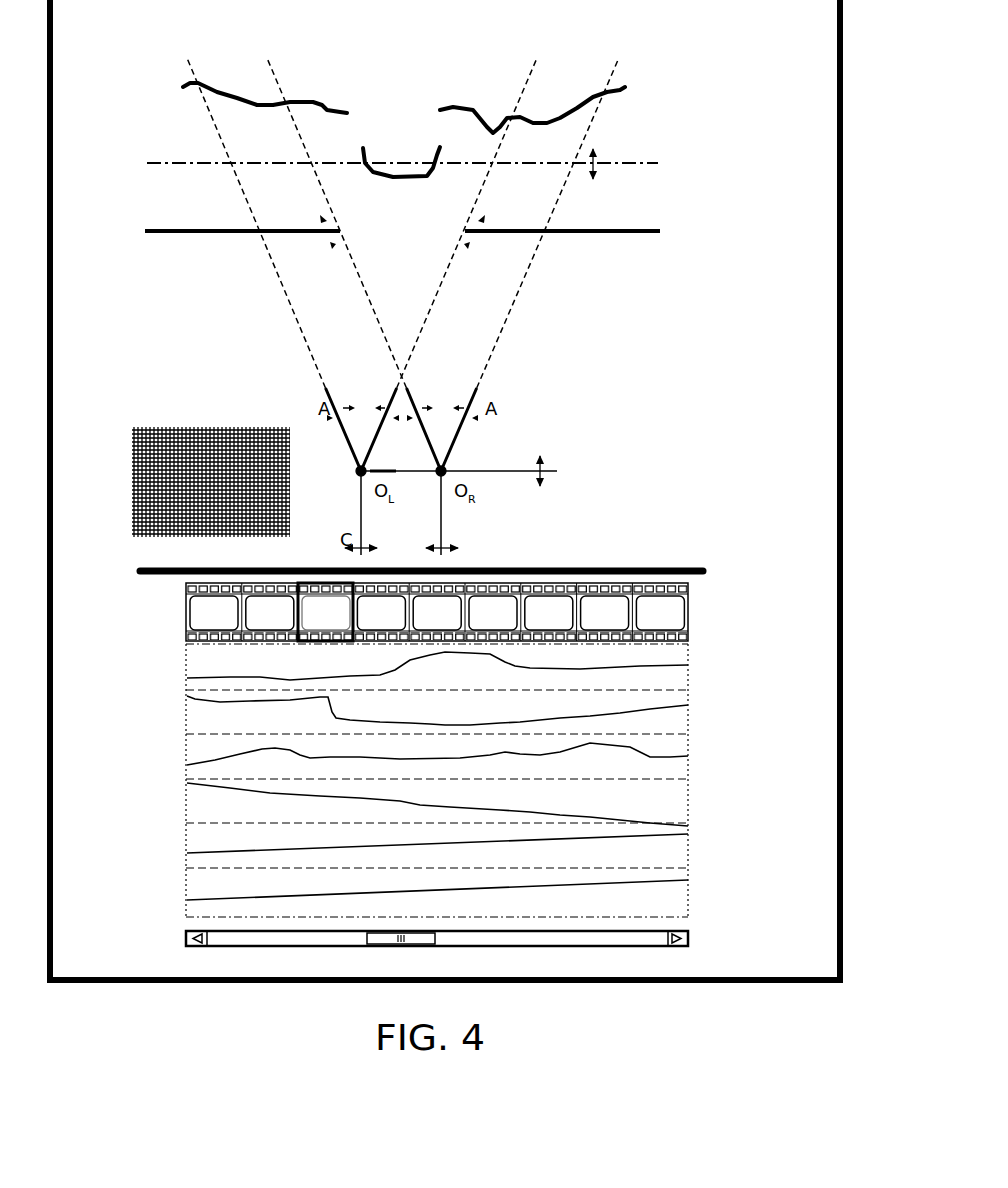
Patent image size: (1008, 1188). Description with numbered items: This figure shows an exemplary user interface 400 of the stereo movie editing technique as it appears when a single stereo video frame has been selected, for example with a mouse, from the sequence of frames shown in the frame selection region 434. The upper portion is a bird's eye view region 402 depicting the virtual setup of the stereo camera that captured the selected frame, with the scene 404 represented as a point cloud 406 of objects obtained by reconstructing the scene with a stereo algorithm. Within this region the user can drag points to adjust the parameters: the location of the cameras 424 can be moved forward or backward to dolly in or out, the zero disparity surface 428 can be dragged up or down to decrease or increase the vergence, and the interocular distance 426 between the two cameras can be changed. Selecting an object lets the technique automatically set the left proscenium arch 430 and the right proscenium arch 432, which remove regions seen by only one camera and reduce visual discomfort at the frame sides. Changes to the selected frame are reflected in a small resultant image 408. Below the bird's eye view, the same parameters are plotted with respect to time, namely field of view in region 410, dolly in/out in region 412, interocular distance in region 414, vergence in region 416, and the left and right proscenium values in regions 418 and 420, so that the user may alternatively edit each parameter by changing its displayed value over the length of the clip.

The user interface 400 is at (860, 358).
The bird's eye view region 402 is at (318, 603).
The scene 404 is at (464, 108).
The point cloud 406 is at (500, 118).
The resultant image 408 is at (175, 430).
The field of view region 410 is at (149, 672).
The dolly in/out region 412 is at (149, 713).
The interocular distance region 414 is at (149, 760).
The vergence region 416 is at (149, 804).
The proscenium region 418 is at (149, 845).
The proscenium region 420 is at (149, 892).
The location of the cameras 424 is at (455, 471).
The convergence distance C 426 is at (443, 530).
The zero disparity surface 428 is at (622, 150).
The proscenium arch E1 430 is at (333, 230).
The proscenium arch E2 432 is at (478, 224).
The frame selection region 434 is at (688, 607).